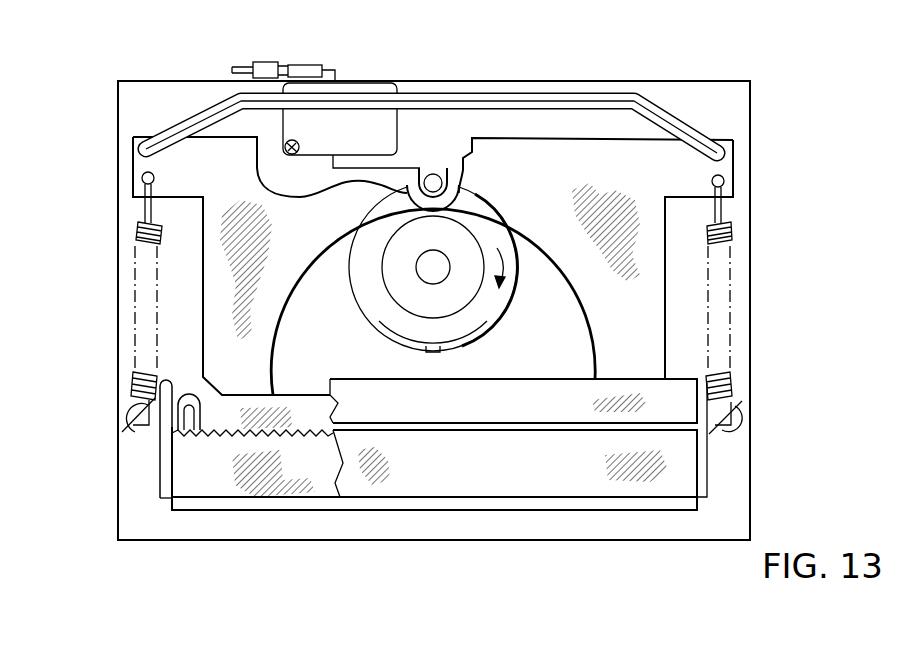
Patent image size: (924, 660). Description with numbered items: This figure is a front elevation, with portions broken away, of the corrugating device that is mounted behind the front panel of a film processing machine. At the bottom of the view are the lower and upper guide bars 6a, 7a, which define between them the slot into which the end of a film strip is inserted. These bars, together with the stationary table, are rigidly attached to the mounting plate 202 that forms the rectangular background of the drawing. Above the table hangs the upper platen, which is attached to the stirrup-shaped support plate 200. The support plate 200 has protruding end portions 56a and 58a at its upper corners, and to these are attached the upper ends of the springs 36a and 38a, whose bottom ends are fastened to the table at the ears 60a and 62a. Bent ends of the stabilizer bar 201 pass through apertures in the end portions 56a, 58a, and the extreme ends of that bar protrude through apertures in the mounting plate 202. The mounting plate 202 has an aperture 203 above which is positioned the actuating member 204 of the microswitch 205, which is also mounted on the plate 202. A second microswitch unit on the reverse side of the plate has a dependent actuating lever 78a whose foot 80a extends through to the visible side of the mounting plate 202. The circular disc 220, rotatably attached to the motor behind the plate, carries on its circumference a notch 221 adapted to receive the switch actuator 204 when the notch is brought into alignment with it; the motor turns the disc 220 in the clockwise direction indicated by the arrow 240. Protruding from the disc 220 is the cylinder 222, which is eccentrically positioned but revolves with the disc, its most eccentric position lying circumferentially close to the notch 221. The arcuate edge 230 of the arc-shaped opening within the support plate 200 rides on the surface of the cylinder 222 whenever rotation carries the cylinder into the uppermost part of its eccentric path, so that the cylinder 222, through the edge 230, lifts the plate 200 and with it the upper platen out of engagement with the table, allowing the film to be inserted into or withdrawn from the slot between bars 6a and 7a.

The lower guide bar 6a is at (653, 500).
The upper guide bar 7a is at (674, 382).
The spring 36a is at (134, 228).
The spring 38a is at (733, 231).
The protruding end portion 56a is at (140, 137).
The protruding end portion 58a is at (728, 137).
The ear 60a is at (150, 432).
The ear 62a is at (737, 432).
The actuating lever 78a is at (200, 430).
The foot 80a is at (158, 422).
The support plate 200 is at (653, 140).
The stabilizer bar 201 is at (532, 93).
The mounting plate 202 is at (602, 83).
The aperture 203 is at (513, 247).
The actuating member 204 is at (437, 180).
The microswitch 205 is at (340, 127).
The circular disc 220 is at (490, 343).
The notch 221 is at (433, 350).
The cylinder 222 is at (383, 300).
The arcuate edge 230 is at (510, 255).
The arrow 240 is at (505, 245).